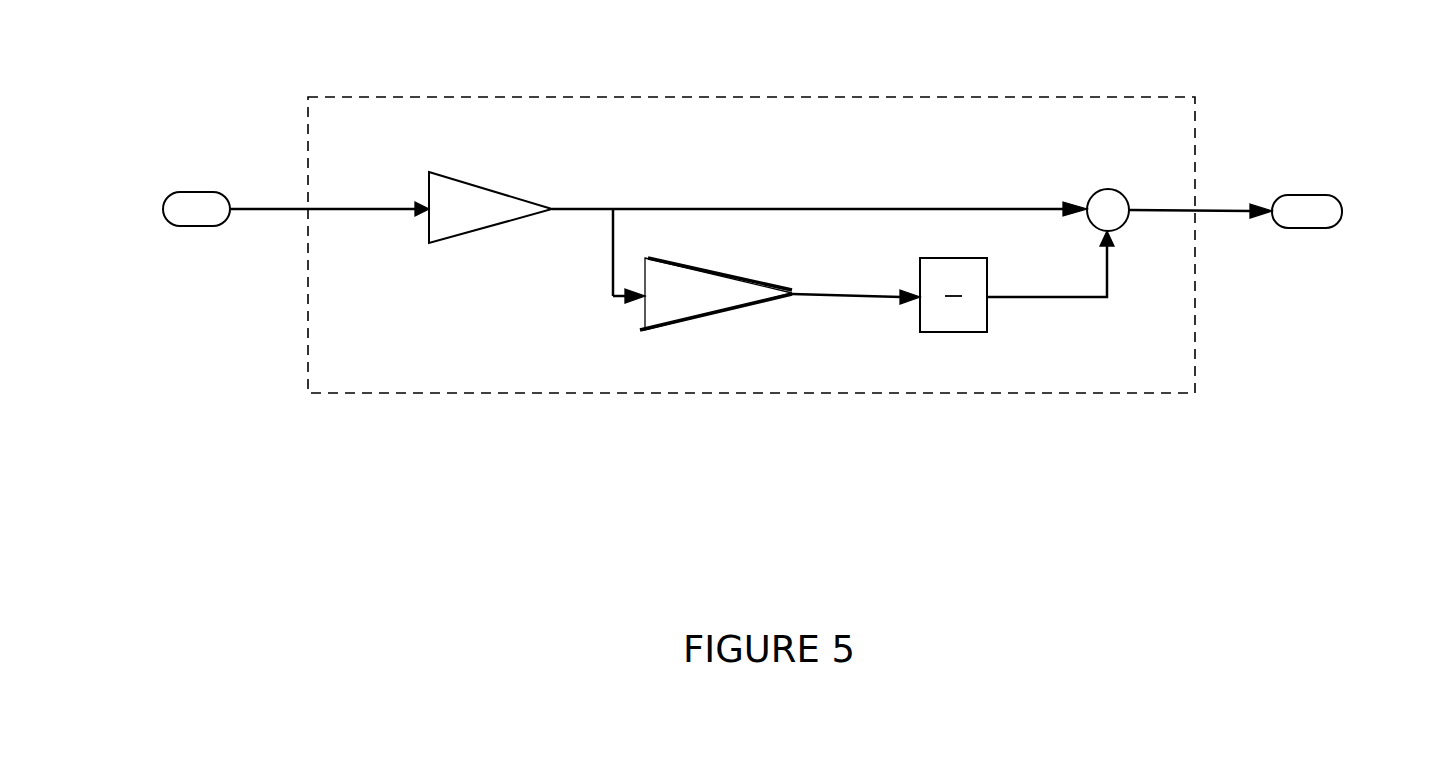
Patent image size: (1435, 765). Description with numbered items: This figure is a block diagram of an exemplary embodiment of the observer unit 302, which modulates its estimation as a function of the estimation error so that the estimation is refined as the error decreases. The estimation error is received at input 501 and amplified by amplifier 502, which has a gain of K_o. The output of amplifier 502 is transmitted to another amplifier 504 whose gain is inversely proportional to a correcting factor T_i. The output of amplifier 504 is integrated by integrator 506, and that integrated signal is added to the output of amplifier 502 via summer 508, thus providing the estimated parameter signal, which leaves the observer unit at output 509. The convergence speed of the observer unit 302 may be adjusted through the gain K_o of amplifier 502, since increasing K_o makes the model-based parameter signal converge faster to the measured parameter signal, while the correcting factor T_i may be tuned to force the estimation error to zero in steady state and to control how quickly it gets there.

The observer unit 302 is at (803, 97).
The input 501 is at (196, 192).
The amplifier 502 is at (485, 183).
The amplifier 504 is at (697, 318).
The integrator 506 is at (962, 325).
The summer 508 is at (1110, 190).
The estimation signal output 509 is at (1295, 192).